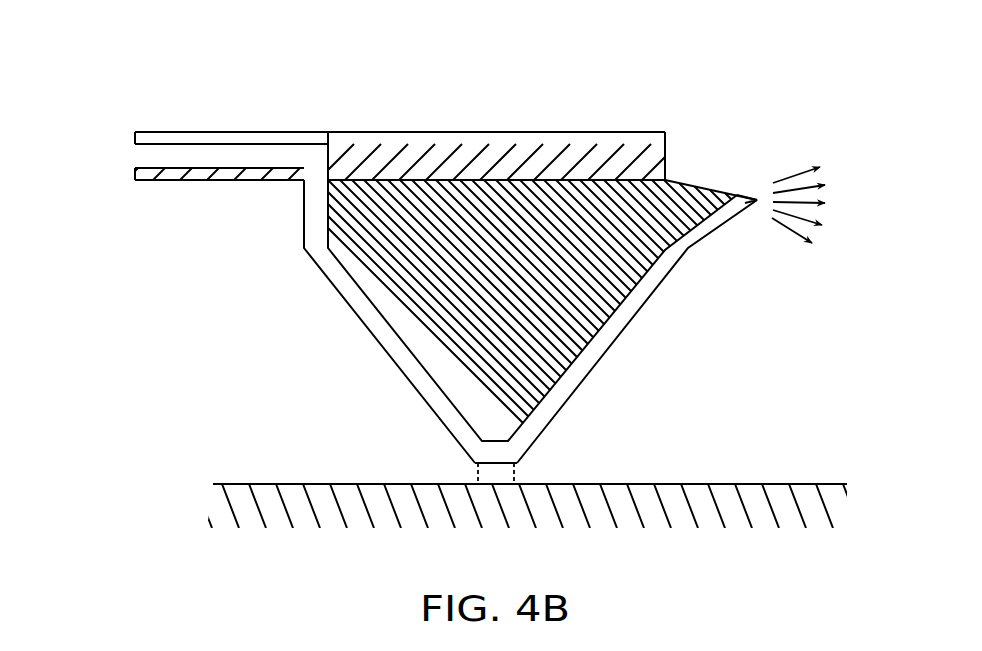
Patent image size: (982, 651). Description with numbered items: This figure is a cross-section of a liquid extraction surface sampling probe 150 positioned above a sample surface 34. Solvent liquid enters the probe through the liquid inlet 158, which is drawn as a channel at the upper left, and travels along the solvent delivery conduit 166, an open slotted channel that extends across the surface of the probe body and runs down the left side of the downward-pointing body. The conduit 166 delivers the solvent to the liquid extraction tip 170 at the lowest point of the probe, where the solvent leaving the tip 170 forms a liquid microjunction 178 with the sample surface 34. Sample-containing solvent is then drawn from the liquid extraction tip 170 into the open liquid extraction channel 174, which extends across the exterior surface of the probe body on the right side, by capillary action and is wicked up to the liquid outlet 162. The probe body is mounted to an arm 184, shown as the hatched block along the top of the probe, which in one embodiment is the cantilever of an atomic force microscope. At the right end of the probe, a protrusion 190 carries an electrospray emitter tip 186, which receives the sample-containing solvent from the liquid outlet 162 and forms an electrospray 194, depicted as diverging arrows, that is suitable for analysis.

The liquid extraction surface sampling probe 150 is at (458, 95).
The liquid inlet 158 is at (135, 157).
The arm 184 is at (582, 131).
The liquid outlet 162 is at (675, 248).
The solvent delivery conduit 166 is at (370, 322).
The liquid extraction tip 170 is at (472, 467).
The liquid extraction channel 174 is at (630, 308).
The liquid microjunction 178 is at (520, 476).
The protrusion 190 is at (697, 186).
The electrospray emitter tip 186 is at (750, 197).
The electrospray 194 is at (783, 227).
The sample surface 34 is at (763, 484).